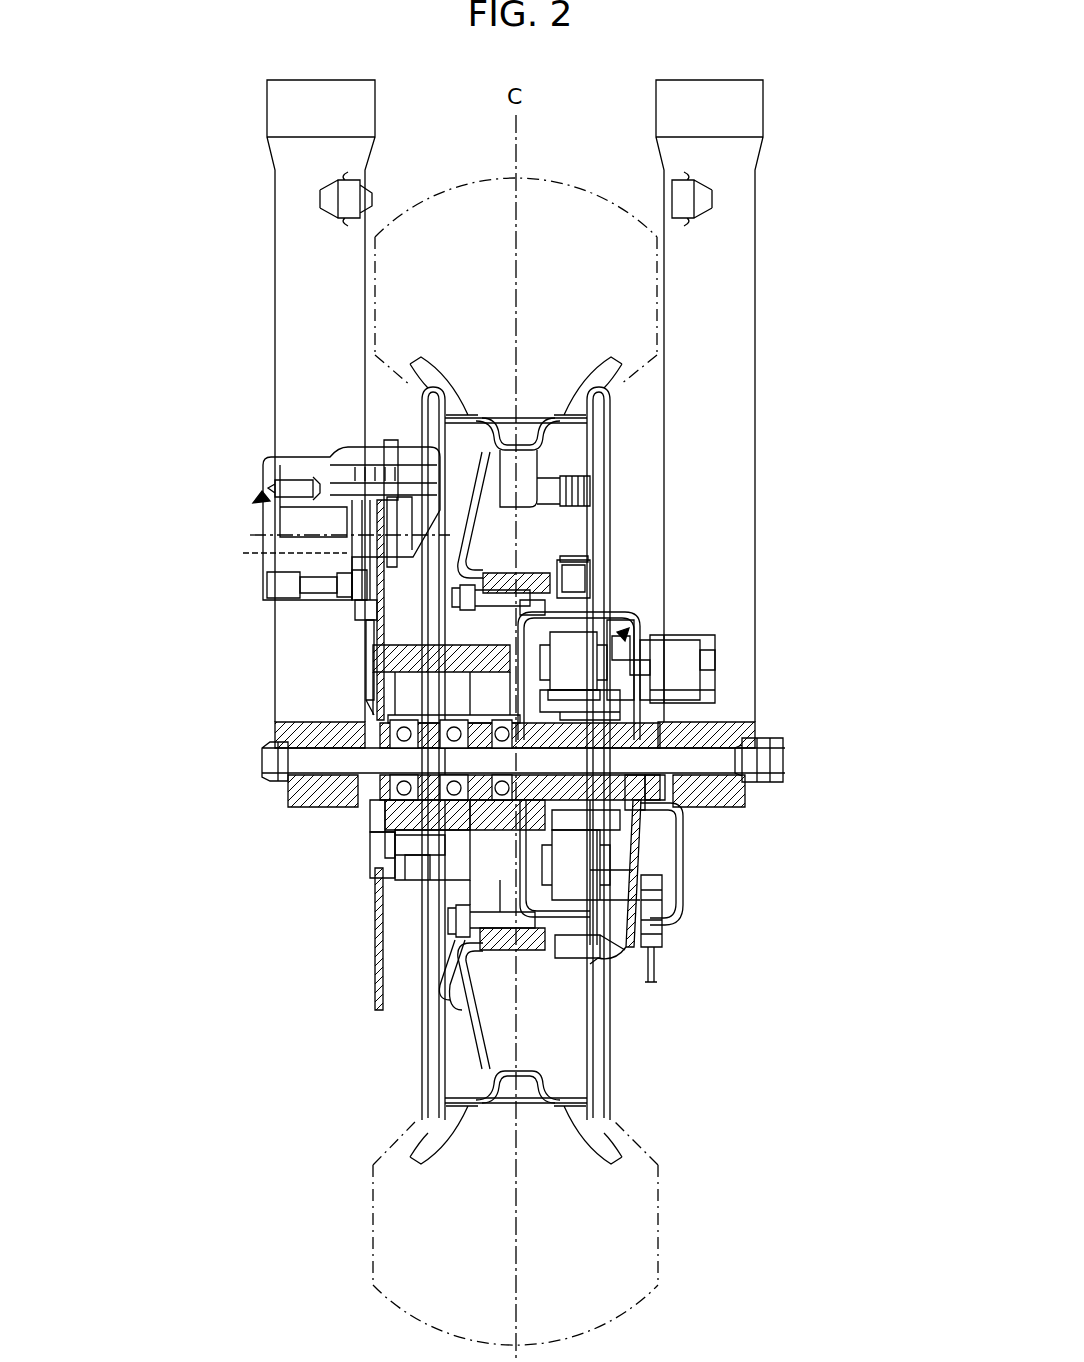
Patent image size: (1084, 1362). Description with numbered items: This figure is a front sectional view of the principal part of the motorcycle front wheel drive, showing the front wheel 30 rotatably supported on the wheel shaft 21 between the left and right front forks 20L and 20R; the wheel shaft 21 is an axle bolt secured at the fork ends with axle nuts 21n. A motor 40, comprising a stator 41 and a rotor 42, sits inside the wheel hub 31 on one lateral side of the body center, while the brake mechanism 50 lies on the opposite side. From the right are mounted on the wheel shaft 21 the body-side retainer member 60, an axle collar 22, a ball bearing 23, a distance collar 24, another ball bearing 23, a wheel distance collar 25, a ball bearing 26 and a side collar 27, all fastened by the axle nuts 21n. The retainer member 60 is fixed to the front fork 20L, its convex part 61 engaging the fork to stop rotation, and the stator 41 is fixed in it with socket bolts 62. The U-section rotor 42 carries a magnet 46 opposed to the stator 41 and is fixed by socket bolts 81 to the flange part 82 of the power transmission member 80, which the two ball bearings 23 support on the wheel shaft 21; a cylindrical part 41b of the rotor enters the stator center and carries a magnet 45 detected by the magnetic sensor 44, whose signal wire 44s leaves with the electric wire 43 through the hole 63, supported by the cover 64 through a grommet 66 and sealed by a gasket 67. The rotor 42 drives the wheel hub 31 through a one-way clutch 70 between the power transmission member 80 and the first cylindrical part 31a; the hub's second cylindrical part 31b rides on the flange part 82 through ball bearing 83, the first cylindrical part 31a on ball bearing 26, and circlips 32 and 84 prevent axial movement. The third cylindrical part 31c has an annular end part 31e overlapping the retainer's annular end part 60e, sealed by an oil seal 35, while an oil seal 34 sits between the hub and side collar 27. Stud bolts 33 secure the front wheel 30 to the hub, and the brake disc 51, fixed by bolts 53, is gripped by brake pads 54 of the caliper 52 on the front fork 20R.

The right front fork 20R is at (282, 203).
The left front fork 20L is at (740, 280).
The front wheel 30 is at (443, 433).
The wheel hub 31 is at (380, 558).
The first cylindrical part 31a is at (385, 713).
The second cylindrical part 31b is at (385, 610).
The third cylindrical part 31c is at (525, 592).
The annular end part 31e is at (600, 602).
The brake mechanism 50 is at (253, 503).
The braking part 52 is at (350, 467).
The brake pads 54 is at (395, 518).
The power transmission member 80 is at (385, 651).
The socket bolts 81 is at (385, 695).
The flange part 82 is at (385, 661).
The ball bearing 83 is at (385, 632).
The one-way clutch 70 is at (402, 722).
The oil seal 34 is at (390, 723).
The side collar 27 is at (395, 793).
The circlip 32 is at (393, 799).
The ball bearing 26 is at (391, 805).
The wheel distance collar 25 is at (389, 811).
The circlip 84 is at (387, 817).
The ball bearing 23 is at (385, 824).
The bolts 53 is at (384, 832).
The distance collar 24 is at (381, 845).
The part to be braked 51 is at (378, 864).
The stud bolts 33 is at (450, 928).
The wheel shaft 21 is at (782, 760).
The axle nuts 21n is at (765, 740).
The axle collar 22 is at (625, 789).
The oil seal 35 is at (540, 612).
The motor 40 is at (617, 632).
The stator 41 is at (585, 680).
The cylindrical part 41b is at (560, 700).
The rotor 42 is at (625, 615).
The magnetic sensor 44 is at (690, 672).
The signal wire 44s is at (715, 660).
The magnet 45 is at (600, 693).
The magnet 46 is at (640, 625).
The body-side retainer member 60 is at (590, 596).
The annular end part 60e is at (578, 553).
The convex part 61 is at (640, 684).
The socket bolts 62 is at (678, 862).
The hole 63 is at (668, 886).
The cover 64 is at (652, 917).
The grommet 66 is at (672, 927).
The gasket 67 is at (605, 838).
The electric wire 43 is at (657, 963).